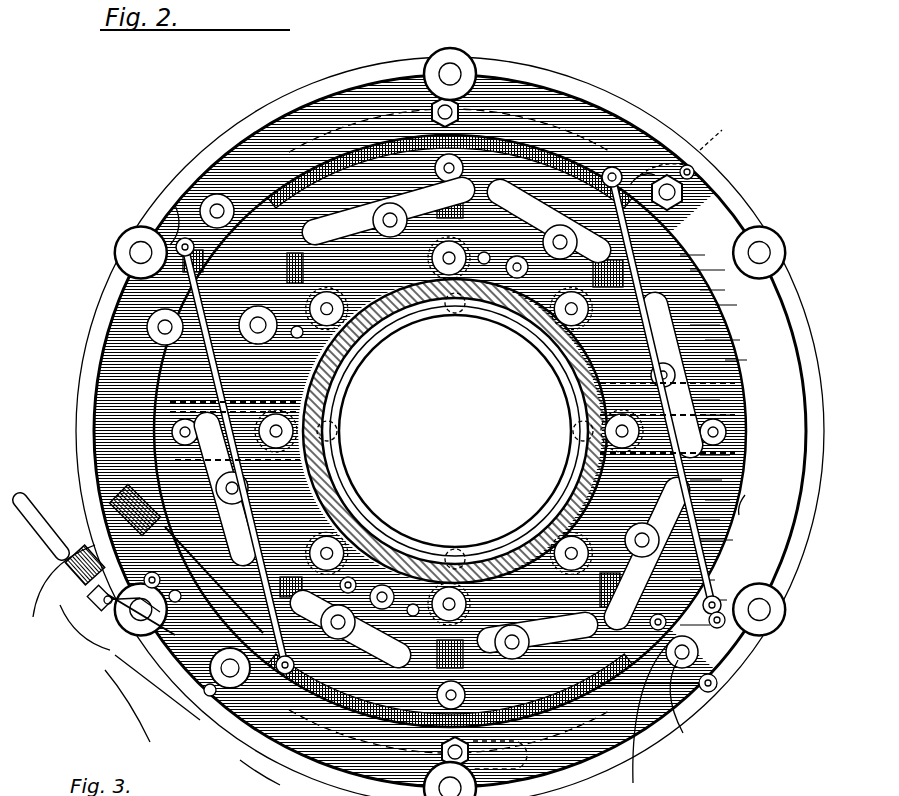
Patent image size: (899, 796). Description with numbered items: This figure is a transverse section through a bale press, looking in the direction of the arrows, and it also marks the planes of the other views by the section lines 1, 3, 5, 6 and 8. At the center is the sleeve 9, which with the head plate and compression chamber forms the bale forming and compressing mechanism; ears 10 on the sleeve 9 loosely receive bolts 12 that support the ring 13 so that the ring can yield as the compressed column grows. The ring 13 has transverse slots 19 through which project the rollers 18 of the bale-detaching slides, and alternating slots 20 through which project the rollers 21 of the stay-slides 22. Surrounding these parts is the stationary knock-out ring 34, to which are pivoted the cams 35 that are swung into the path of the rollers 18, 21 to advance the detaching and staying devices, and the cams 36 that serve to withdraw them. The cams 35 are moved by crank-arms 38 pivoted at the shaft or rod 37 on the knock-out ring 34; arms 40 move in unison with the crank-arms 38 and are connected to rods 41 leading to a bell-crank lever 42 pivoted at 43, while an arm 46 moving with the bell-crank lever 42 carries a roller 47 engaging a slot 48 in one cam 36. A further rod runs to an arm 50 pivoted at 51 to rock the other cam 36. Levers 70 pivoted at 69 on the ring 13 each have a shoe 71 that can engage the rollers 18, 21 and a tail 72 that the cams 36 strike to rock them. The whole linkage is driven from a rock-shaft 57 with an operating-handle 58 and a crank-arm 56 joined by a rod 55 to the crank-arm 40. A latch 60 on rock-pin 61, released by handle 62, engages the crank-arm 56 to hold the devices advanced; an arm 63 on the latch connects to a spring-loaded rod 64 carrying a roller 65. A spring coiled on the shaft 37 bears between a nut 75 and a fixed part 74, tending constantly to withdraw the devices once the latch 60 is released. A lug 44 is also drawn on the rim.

The section line 1 1 is at (85, 433).
The section line 3 3 is at (42, 612).
The section line 5 5 is at (200, 155).
The section line 6 6 is at (432, 535).
The section line 8 8 is at (735, 130).
The sleeve 9 is at (335, 480).
The apertured or slotted ears 10 is at (375, 336).
The bolts 12 is at (318, 441).
The ring 13 is at (150, 648).
The extensions or rollers 18 is at (478, 130).
The transverse slots 19 is at (520, 135).
The slots 20 is at (300, 130).
The extensions or rollers 21 is at (300, 176).
The stay-slides 22 is at (330, 160).
The knock-out ring 34 is at (565, 145).
The cams 35 is at (610, 150).
The cams 36 is at (180, 250).
The shaft or rod 37 is at (690, 191).
The crank-arms 38 is at (674, 165).
The arms 40 is at (690, 168).
The rods 41 is at (580, 703).
The bell-crank lever 42 is at (738, 672).
The pivot 43 is at (691, 703).
The lug 44 is at (745, 507).
The arm 46 is at (652, 712).
The roller or projection 47 is at (663, 638).
The slot 48 is at (782, 608).
The arm 50 is at (165, 215).
The pivot 51 is at (200, 204).
The rod 55 is at (361, 447).
The crank-arm 56 is at (98, 606).
The rock-shaft 57 is at (85, 612).
The operating-handle 58 is at (60, 540).
The latch 60 is at (110, 520).
The rock-pin 61 is at (125, 618).
The operating-handle 62 is at (97, 603).
The arm or extension 63 is at (452, 406).
The rod 64 is at (222, 456).
The roller 65 is at (163, 451).
The pivots 69 is at (398, 256).
The levers 70 is at (448, 424).
The shoe 71 is at (403, 429).
The tail 72 is at (448, 420).
The fixed part 74 is at (190, 705).
The nut 75 is at (215, 669).